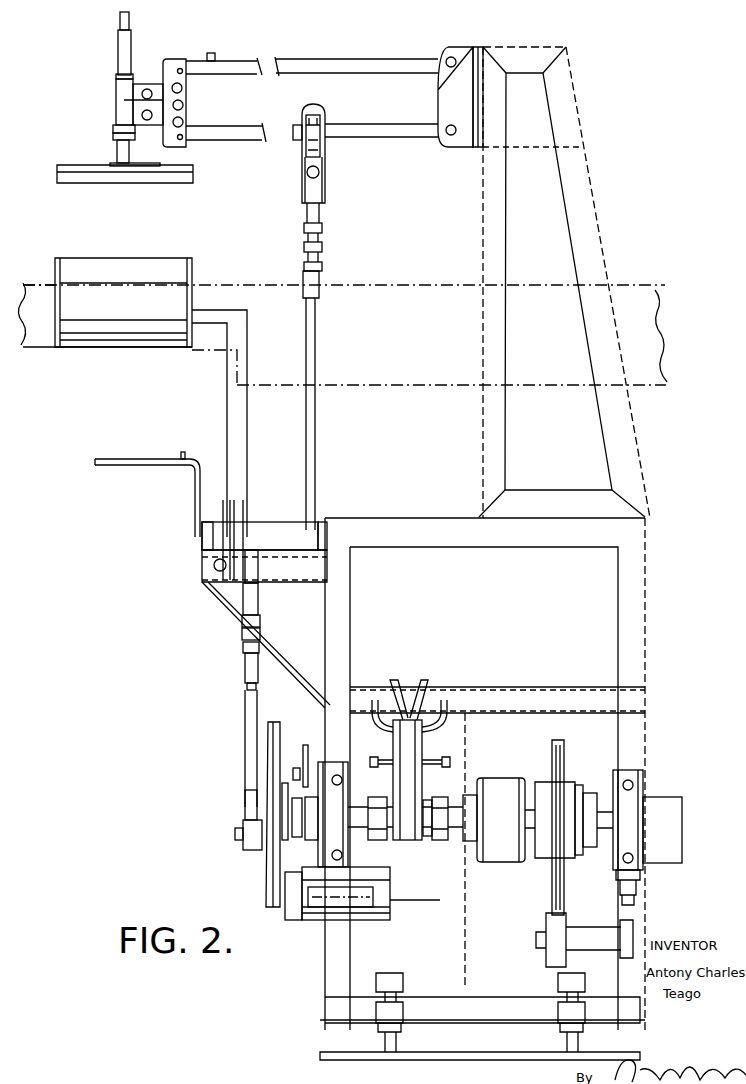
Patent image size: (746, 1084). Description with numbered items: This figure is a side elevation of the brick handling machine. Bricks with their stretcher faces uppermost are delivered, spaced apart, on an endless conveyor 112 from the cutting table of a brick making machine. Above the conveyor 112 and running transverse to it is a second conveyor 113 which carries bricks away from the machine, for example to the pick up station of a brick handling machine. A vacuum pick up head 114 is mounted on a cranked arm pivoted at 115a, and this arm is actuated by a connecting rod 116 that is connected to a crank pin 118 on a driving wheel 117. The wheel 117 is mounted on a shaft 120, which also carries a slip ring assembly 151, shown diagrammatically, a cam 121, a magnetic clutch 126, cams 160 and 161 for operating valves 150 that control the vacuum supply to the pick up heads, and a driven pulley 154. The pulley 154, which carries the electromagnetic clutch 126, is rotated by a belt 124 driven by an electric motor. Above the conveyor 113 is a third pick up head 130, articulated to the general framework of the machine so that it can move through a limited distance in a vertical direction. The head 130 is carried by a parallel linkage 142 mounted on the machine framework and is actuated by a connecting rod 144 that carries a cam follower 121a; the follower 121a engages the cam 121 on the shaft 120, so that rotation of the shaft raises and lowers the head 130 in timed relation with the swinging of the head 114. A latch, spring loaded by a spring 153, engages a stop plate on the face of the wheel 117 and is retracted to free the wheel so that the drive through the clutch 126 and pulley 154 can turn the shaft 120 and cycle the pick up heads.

The endless conveyor 112 is at (112, 464).
The second conveyor 113 is at (632, 300).
The vacuum pick up head 114 is at (192, 287).
The pivot 115a is at (215, 567).
The connecting rod 116 is at (245, 671).
The driving wheel 117 is at (267, 770).
The crank pin 118 is at (238, 835).
The shaft 120 is at (245, 812).
The cam 121 is at (295, 835).
The cam follower 121a is at (296, 768).
The belt 124 is at (560, 750).
The magnetic clutch 126 is at (503, 770).
The third pick up head 130 is at (180, 183).
The parallel linkage 142 is at (340, 62).
The connecting rod 144 is at (313, 449).
The valves 150 is at (406, 830).
The slip ring assembly 151 is at (657, 802).
The spring 153 is at (320, 905).
The driven pulley 154 is at (550, 888).
The cam 160 is at (418, 835).
The cam 161 is at (393, 780).